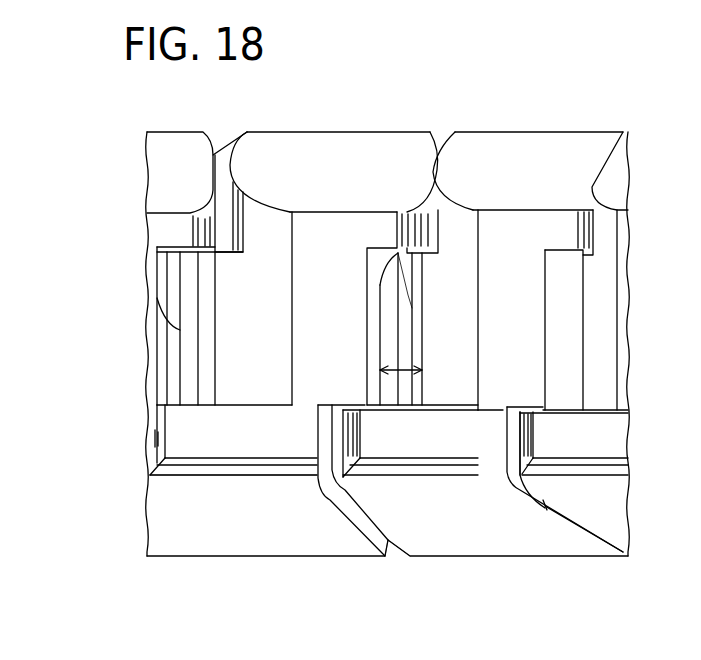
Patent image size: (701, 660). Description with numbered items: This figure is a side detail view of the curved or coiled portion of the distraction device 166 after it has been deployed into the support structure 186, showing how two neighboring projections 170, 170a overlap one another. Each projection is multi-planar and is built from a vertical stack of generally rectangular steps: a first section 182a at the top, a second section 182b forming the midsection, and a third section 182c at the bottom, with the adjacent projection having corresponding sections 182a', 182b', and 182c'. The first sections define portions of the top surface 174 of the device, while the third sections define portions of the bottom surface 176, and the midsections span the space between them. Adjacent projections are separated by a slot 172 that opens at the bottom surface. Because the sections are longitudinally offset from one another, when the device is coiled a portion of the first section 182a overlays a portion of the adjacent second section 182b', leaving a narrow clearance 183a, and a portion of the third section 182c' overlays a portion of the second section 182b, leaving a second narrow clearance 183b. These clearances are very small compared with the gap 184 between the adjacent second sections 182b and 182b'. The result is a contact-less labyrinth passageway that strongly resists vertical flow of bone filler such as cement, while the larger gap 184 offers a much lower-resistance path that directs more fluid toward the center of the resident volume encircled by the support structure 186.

The distraction device 166 is at (176, 120).
The curved or coiled support structure 186 is at (387, 271).
The projection 170 is at (278, 147).
The adjacent projection 170a is at (483, 137).
The top surface 174 is at (350, 126).
The bottom surface 176 is at (278, 481).
The slot 172 is at (397, 558).
The first section 182a is at (327, 287).
The first section of adjacent projection 182a' is at (510, 289).
The second section 182b is at (317, 328).
The second section of adjacent projection 182b' is at (553, 310).
The third section 182c is at (233, 440).
The third section of adjacent projection 182c' is at (485, 443).
The clearance 183a is at (437, 225).
The clearance 183b is at (558, 408).
The gap 184 is at (403, 377).